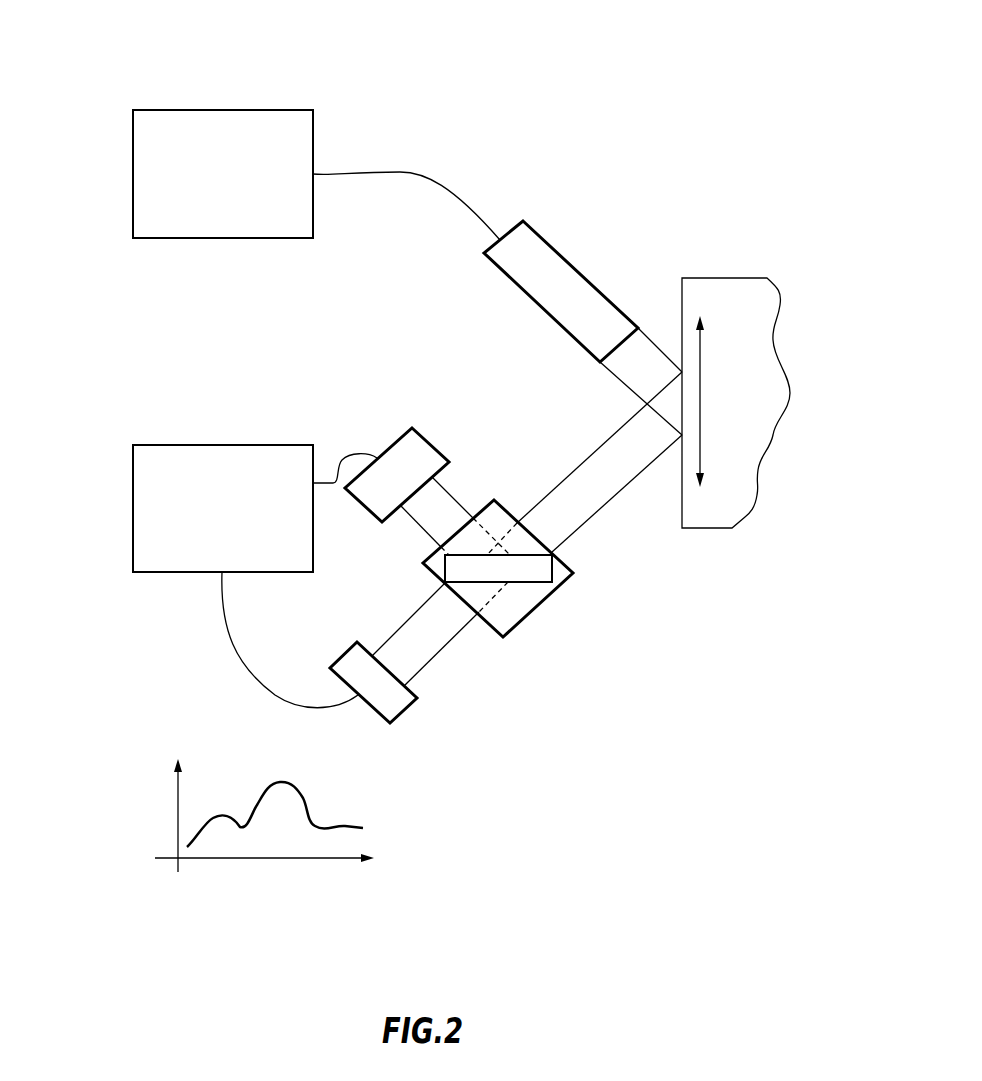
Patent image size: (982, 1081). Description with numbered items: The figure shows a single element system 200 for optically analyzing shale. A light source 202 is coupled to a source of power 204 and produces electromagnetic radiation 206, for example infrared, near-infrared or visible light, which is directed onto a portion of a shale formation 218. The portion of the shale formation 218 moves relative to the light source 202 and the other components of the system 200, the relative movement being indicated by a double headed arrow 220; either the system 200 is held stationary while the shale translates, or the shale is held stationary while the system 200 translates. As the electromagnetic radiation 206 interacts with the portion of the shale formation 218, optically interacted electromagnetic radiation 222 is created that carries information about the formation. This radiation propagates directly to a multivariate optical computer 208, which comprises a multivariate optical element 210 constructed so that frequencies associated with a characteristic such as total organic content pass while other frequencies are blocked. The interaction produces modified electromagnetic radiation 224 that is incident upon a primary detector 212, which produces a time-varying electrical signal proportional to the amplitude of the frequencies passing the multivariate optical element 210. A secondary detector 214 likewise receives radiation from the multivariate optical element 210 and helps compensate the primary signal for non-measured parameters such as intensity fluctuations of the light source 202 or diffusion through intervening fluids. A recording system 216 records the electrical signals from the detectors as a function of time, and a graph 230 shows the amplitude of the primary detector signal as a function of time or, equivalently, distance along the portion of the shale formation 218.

The system 200 is at (114, 64).
The light source 202 is at (538, 230).
The source of power 204 is at (301, 110).
The electromagnetic radiation 206 is at (642, 348).
The multivariate optical computer 208 is at (532, 615).
The multivariate optical element 210 is at (543, 571).
The primary detector 212 is at (405, 715).
The secondary detector 214 is at (396, 431).
The recording system 216 is at (255, 576).
The portion of shale formation 218 is at (747, 310).
The double headed arrow 220 is at (702, 407).
The optically interacted electromagnetic radiation 222 is at (620, 442).
The modified electromagnetic radiation 224 is at (433, 638).
The graph 230 is at (184, 886).